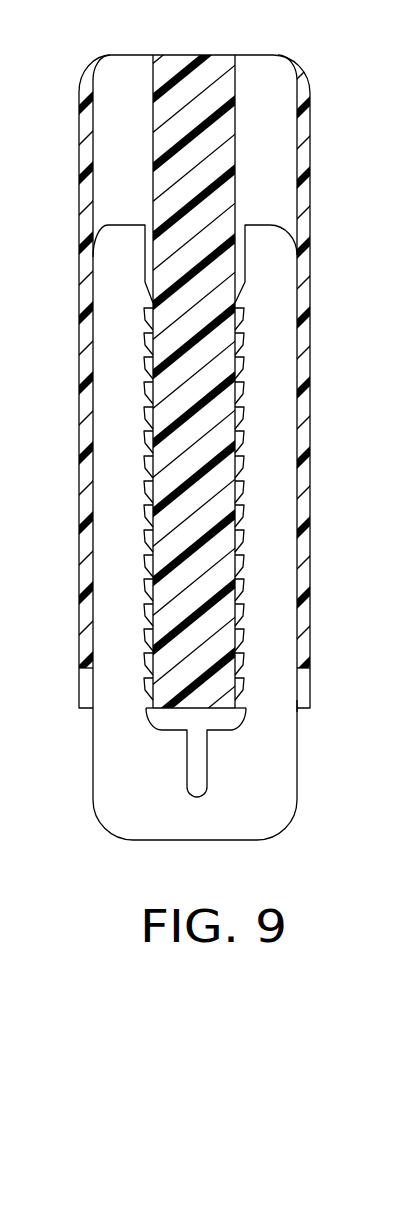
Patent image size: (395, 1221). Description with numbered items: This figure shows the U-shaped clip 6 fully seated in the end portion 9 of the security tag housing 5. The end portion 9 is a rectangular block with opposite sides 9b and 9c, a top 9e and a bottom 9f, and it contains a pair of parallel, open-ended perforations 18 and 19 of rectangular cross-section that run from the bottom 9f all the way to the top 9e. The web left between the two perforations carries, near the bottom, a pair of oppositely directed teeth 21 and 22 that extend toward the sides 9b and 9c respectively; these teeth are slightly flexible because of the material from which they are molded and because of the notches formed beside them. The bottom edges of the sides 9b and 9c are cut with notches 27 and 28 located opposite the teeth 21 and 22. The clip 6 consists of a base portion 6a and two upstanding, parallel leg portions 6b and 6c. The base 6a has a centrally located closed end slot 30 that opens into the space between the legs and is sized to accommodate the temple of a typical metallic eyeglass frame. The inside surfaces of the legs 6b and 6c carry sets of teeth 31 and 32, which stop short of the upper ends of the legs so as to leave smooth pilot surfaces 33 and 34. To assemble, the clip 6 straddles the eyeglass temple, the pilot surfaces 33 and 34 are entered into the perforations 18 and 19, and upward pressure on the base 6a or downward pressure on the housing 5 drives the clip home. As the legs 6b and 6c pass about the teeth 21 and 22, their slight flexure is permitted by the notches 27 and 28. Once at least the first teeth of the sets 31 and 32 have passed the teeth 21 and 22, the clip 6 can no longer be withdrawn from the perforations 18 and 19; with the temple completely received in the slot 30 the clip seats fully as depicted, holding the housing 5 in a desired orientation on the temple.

The security tag housing 5 is at (227, 398).
The clip 6 is at (199, 478).
The base portion 6a is at (200, 825).
The leg portion 6b is at (102, 358).
The leg portion 6c is at (281, 477).
The end portion 9 is at (195, 373).
The side 9b is at (82, 470).
The side 9c is at (311, 520).
The top 9e is at (182, 55).
The bottom 9f is at (305, 712).
The perforation 18 is at (95, 78).
The perforation 19 is at (293, 80).
The tooth 21 is at (148, 692).
The tooth 22 is at (244, 690).
The notch 27 is at (83, 690).
The notch 28 is at (306, 688).
The closed end slot 30 is at (188, 768).
The set of teeth 31 is at (147, 321).
The set of teeth 32 is at (238, 298).
The pilot surface 33 is at (145, 222).
The pilot surface 34 is at (246, 225).